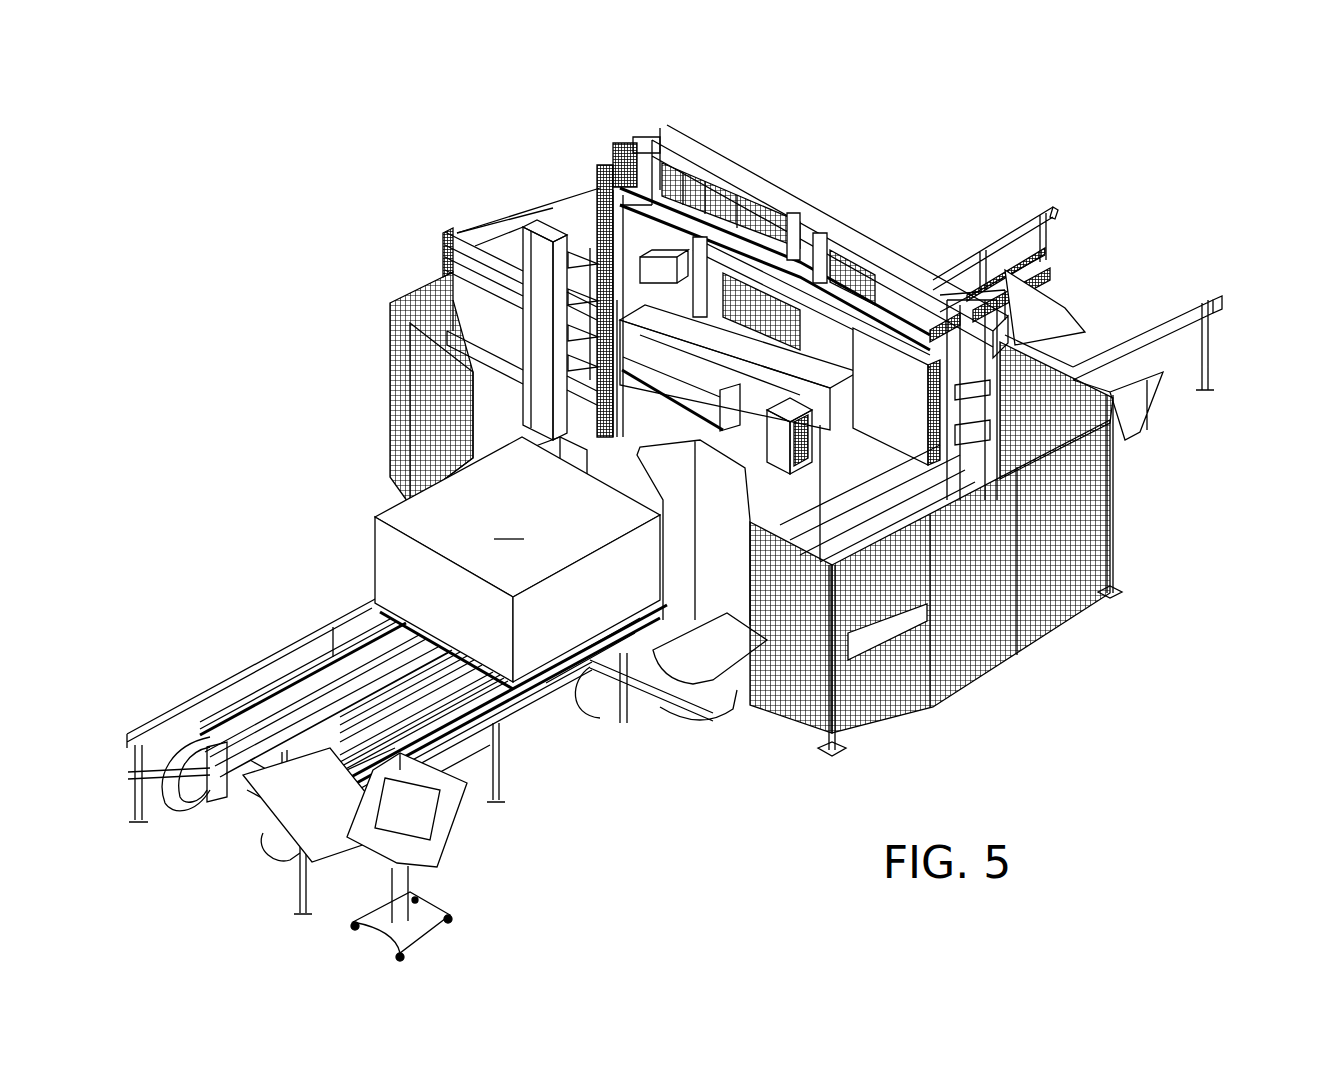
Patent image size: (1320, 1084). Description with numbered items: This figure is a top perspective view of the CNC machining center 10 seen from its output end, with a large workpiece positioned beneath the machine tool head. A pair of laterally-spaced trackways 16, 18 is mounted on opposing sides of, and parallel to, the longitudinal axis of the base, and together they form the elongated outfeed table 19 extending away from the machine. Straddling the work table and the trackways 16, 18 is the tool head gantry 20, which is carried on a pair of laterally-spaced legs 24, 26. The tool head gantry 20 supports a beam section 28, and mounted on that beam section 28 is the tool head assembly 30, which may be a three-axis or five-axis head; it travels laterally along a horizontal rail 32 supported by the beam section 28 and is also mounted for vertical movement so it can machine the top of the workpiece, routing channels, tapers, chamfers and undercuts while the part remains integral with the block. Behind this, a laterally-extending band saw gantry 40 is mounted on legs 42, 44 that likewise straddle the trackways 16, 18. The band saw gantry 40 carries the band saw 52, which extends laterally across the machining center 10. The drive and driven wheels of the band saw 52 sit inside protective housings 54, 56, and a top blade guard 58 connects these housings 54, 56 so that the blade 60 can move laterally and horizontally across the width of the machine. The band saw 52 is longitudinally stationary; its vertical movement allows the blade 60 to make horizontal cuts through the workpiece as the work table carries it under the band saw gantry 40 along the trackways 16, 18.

The CNC machining center 10 is at (390, 158).
The trackway 16 is at (1036, 208).
The trackway 18 is at (1215, 304).
The outfeed table 19 is at (1085, 264).
The tool head gantry 20 is at (687, 380).
The leg 24 is at (490, 370).
The leg 26 is at (680, 573).
The beam section 28 is at (470, 315).
The tool head assembly 30 is at (445, 238).
The horizontal rail 32 is at (447, 250).
The band saw gantry 40 is at (742, 166).
The leg 42 is at (620, 163).
The leg 44 is at (945, 468).
The band saw 52 is at (812, 248).
The protective housing 54 is at (588, 202).
The protective housing 56 is at (880, 412).
The top blade guard 58 is at (740, 243).
The blade 60 is at (800, 385).